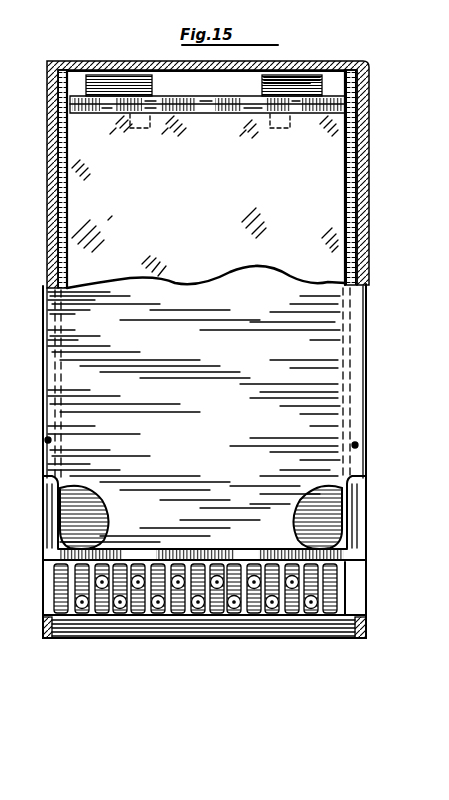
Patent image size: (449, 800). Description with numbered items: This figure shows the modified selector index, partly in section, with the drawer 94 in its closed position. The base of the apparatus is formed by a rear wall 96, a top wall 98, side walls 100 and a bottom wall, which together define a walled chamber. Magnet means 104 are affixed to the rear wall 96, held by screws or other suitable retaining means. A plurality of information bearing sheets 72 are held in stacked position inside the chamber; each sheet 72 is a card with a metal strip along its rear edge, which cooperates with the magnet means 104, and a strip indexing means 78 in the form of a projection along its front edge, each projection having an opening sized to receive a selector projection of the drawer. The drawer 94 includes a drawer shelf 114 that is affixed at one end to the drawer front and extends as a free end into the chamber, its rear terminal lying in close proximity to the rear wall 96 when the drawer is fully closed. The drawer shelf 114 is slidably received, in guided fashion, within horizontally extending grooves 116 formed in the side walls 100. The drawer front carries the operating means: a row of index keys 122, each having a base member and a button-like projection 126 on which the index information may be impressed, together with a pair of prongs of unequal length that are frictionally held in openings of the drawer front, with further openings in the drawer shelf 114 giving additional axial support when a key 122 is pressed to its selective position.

The information bearing sheets 72 is at (210, 226).
The strip indexing means 78 is at (205, 113).
The drawer 94 is at (110, 640).
The rear wall 96 is at (131, 67).
The top wall 98 is at (210, 348).
The side walls 100 is at (47, 208).
The magnet means 104 is at (108, 90).
The drawer shelf 114 is at (52, 166).
The horizontally extending grooves 116 is at (70, 66).
The index key 122 is at (249, 622).
The projection 126 is at (180, 582).